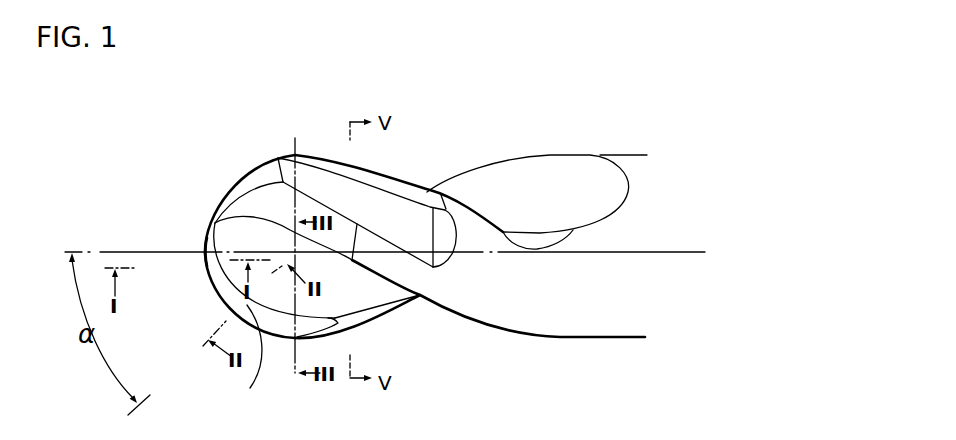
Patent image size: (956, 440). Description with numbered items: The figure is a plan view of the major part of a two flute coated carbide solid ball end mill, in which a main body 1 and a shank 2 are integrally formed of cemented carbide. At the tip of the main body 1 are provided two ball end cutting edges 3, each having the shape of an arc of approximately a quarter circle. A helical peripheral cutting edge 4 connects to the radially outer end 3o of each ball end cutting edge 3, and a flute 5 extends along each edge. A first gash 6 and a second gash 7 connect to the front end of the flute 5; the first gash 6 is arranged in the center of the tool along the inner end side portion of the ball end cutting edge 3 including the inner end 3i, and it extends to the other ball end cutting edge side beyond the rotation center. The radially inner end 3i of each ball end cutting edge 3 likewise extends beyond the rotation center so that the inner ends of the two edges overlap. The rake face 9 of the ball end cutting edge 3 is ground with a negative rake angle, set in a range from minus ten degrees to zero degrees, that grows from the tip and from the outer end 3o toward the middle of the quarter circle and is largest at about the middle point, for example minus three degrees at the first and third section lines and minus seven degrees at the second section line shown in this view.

The main body 1 is at (600, 150).
The shank 2 is at (603, 320).
The ball end cutting edge 3 is at (214, 298).
The inner end 3i is at (204, 256).
The outer end 3o is at (297, 337).
The peripheral cutting edge 4 is at (377, 314).
The flute 5 is at (255, 230).
The first gash 6 is at (205, 249).
The second gash 7 is at (213, 223).
The rake face 9 is at (248, 360).